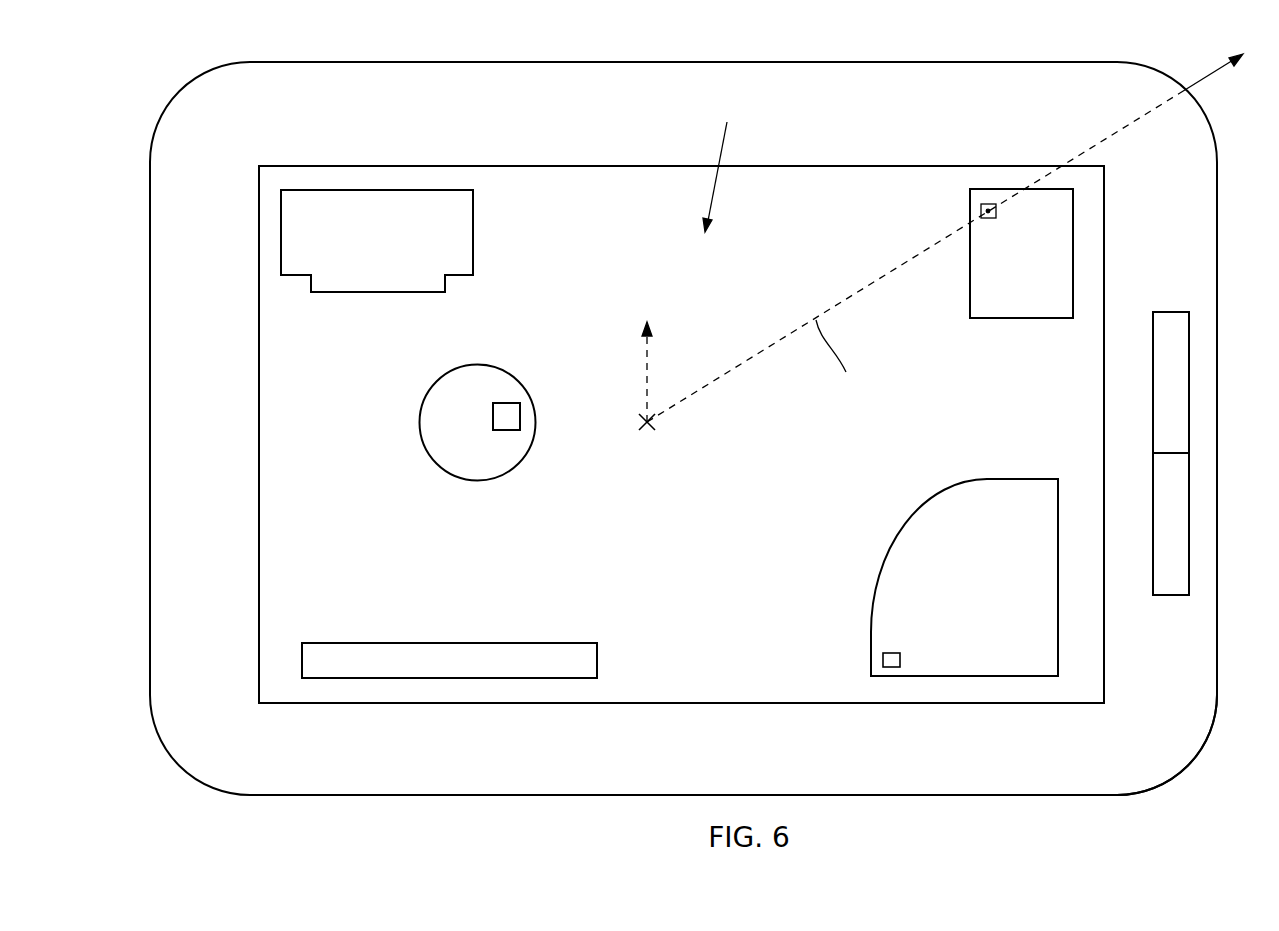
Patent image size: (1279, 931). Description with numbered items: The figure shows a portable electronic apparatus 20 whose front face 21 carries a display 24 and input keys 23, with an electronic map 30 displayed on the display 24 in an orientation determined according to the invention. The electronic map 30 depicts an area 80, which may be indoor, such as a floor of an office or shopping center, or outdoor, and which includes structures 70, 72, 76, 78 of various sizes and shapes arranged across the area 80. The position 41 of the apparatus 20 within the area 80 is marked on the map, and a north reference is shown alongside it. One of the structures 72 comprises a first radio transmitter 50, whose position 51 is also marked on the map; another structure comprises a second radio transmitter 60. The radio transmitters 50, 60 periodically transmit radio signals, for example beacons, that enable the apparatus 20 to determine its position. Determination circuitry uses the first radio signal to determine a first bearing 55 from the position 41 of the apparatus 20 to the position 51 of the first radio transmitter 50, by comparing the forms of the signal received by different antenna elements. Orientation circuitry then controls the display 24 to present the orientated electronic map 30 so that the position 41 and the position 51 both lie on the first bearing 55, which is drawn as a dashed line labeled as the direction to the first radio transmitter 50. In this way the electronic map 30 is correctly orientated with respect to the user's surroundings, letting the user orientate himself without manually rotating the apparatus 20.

The portable electronic apparatus 20 is at (1037, 793).
The front face 21 is at (1162, 763).
The input keys 23 is at (1204, 592).
The display 24 is at (810, 703).
The electronic map 30 is at (731, 132).
The position of the apparatus 41 is at (652, 432).
The first radio transmitter 50 is at (991, 219).
The position of the first radio transmitter 51 is at (997, 212).
The first bearing 55 is at (890, 273).
The second radio transmitter 60 is at (493, 410).
The structure 70 is at (380, 292).
The structure 72 is at (1018, 319).
The structure 76 is at (463, 643).
The structure 78 is at (1031, 478).
The area 80 is at (901, 657).